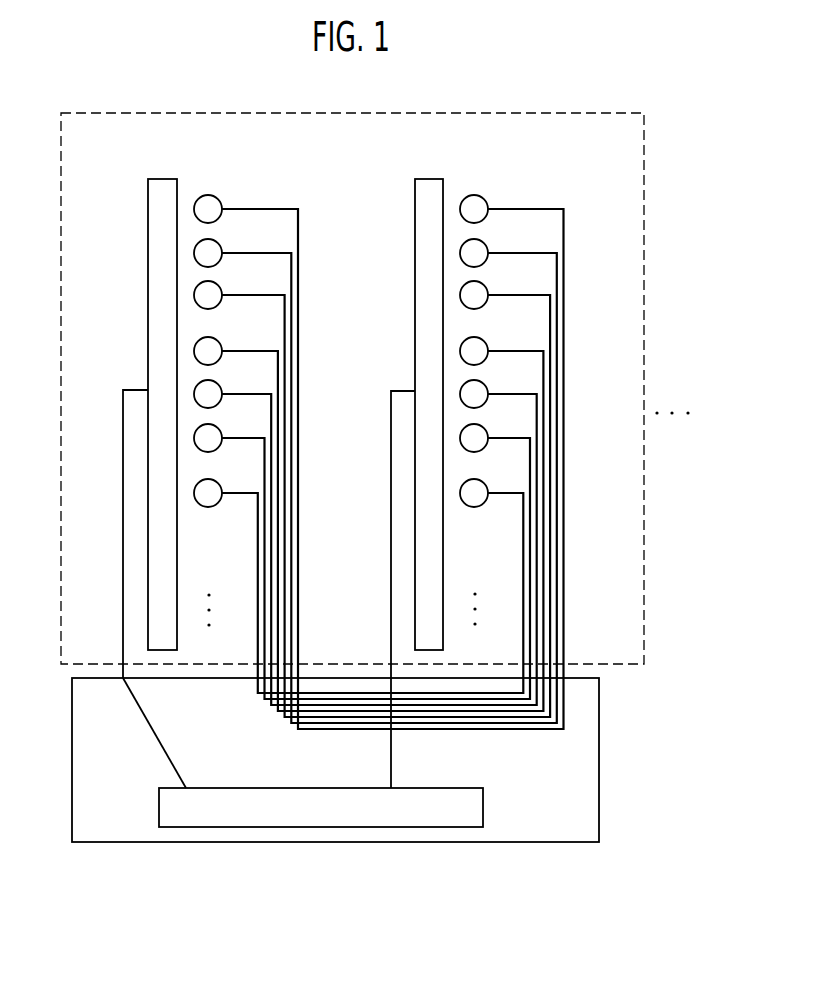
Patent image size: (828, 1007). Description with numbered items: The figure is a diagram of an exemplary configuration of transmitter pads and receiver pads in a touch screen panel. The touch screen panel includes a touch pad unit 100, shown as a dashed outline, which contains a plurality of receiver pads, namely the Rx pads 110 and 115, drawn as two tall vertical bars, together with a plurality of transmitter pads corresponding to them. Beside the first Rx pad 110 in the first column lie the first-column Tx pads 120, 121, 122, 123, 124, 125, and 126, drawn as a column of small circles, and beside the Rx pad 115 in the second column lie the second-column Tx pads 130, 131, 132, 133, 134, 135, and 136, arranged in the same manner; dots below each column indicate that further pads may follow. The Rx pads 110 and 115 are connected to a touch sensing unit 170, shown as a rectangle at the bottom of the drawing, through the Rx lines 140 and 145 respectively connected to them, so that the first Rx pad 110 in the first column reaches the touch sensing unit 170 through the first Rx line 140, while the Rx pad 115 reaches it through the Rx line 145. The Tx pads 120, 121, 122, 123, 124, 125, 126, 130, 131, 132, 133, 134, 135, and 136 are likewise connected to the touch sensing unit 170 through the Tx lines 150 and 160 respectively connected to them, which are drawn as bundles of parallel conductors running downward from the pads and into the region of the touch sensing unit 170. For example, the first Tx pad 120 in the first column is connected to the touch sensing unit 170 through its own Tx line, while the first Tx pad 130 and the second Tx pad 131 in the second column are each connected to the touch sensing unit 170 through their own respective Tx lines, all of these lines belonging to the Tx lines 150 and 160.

The touch pad unit 100 is at (644, 228).
The first Rx pad 110 is at (148, 229).
The Rx pad 115 is at (430, 178).
The (1-1)th Tx pad 120 is at (221, 203).
The Tx pad 121 is at (221, 247).
The Tx pad 122 is at (221, 289).
The Tx pad 123 is at (221, 345).
The Tx pad 124 is at (221, 388).
The Tx pad 125 is at (221, 432).
The Tx pad 126 is at (221, 487).
The (2-1)th Tx pad 130 is at (487, 203).
The (2-2)th Tx pad 131 is at (487, 247).
The Tx pad 132 is at (487, 289).
The Tx pad 133 is at (487, 345).
The Tx pad 134 is at (487, 388).
The Tx pad 135 is at (487, 432).
The Tx pad 136 is at (487, 487).
The first Rx line 140 is at (123, 473).
The Rx line 145 is at (390, 537).
The Tx lines 150 is at (298, 582).
The Tx lines 160 is at (565, 551).
The touch sensing unit 170 is at (200, 827).